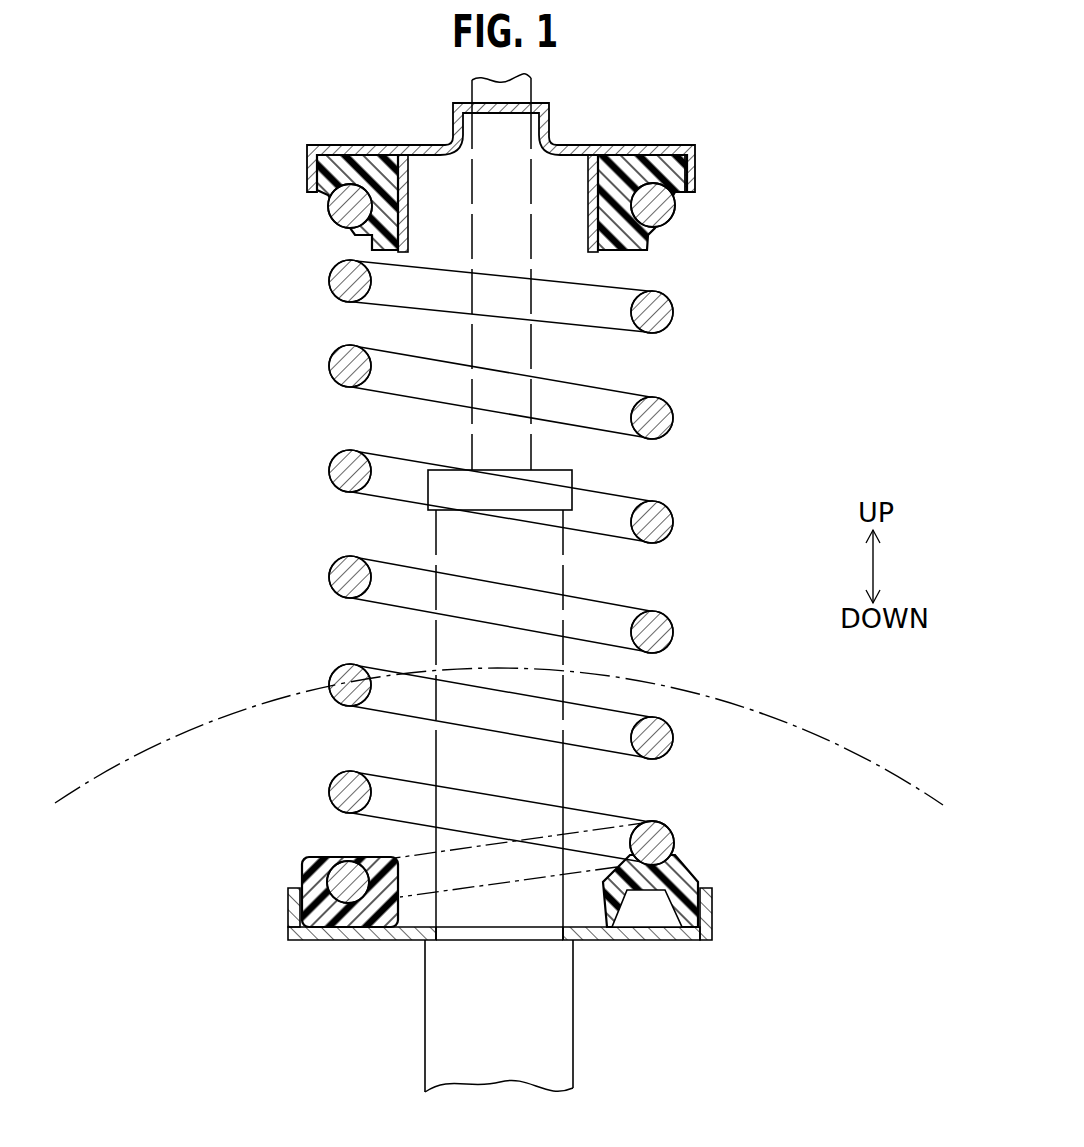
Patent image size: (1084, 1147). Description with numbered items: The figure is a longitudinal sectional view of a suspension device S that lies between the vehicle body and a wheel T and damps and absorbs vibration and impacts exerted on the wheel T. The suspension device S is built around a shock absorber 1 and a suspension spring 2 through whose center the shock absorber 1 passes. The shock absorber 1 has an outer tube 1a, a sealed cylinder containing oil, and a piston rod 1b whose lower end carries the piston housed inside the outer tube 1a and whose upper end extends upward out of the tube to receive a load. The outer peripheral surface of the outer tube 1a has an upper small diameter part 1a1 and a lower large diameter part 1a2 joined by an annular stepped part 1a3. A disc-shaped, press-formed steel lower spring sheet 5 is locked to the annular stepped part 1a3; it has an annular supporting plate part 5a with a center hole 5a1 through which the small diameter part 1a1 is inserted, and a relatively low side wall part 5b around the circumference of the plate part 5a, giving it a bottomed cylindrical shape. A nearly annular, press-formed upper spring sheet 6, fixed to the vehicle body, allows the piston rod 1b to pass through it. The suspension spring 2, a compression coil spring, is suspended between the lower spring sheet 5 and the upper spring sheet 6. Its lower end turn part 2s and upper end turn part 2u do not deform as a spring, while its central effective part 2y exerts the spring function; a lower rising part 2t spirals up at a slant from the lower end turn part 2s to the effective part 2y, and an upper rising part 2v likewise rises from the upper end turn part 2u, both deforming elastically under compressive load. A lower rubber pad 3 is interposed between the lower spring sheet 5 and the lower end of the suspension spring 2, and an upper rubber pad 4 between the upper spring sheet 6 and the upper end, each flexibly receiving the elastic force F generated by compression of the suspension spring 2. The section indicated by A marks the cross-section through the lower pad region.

The shock absorber 1 is at (525, 583).
The outer tube 1a is at (506, 1009).
The small diameter part 1a1 is at (565, 566).
The large diameter part 1a2 is at (575, 1062).
The annular stepped part 1a3 is at (578, 932).
The piston rod 1b is at (478, 428).
The suspension spring 2 is at (475, 578).
The upper end turn part 2u is at (663, 207).
The upper rising part 2v is at (728, 205).
The effective part 2y is at (292, 280).
The lower end turn part 2s is at (348, 880).
The lower rising part 2t is at (728, 792).
The lower rubber pad 3 is at (690, 862).
The upper rubber pad 4 is at (345, 243).
The lower spring sheet 5 is at (493, 945).
The plate part 5a is at (494, 968).
The center hole 5a1 is at (440, 936).
The side wall part 5b is at (300, 920).
The upper spring sheet 6 is at (342, 145).
The suspension device S is at (740, 108).
The wheel T is at (743, 708).
The elastic force F is at (237, 292).
The section line A- A is at (622, 792).